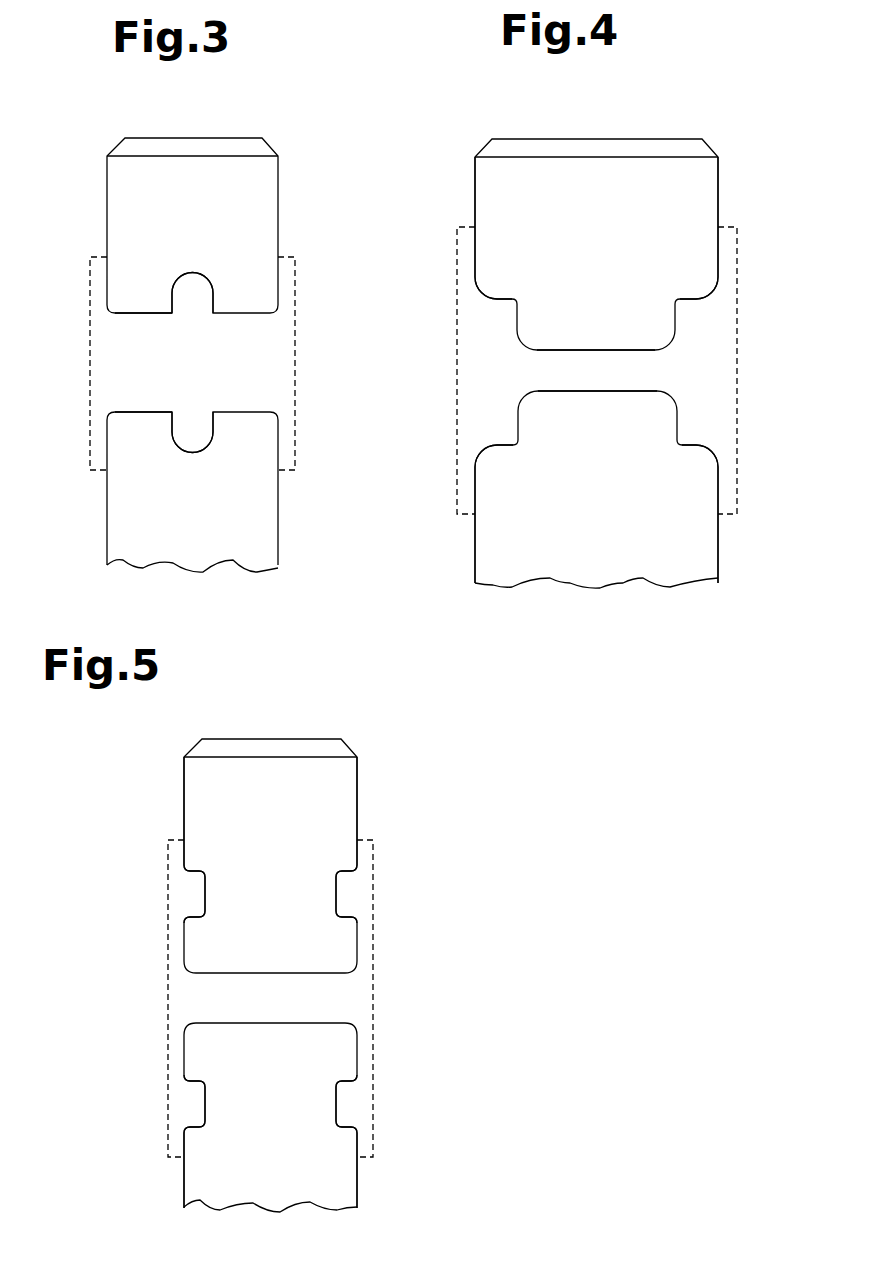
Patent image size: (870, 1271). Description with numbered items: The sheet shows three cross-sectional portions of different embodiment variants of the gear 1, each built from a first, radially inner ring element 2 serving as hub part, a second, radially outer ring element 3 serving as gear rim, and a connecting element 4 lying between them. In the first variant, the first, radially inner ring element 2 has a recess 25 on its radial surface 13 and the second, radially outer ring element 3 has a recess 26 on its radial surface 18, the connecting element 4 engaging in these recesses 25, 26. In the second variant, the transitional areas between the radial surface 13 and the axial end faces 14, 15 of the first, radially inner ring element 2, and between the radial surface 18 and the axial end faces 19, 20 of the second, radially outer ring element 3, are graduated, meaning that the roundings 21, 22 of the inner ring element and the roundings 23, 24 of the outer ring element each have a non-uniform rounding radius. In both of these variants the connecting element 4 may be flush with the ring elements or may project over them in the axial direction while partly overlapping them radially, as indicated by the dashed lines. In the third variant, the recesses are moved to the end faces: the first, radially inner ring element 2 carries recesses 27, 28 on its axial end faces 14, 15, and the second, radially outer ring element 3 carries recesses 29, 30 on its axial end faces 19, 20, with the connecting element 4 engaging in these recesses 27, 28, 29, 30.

In FIG. 3, the gear 1 is at (77, 176).
In FIG. 4, the gear 1 is at (447, 177).
In FIG. 5, the gear 1 is at (109, 831).
In FIG. 3, the first, radially inner ring element 2 is at (100, 509).
In FIG. 4, the first, radially inner ring element 2 is at (731, 524).
In FIG. 5, the first, radially inner ring element 2 is at (185, 1193).
In FIG. 3, the second, radially outer ring element 3 is at (293, 169).
In FIG. 4, the second, radially outer ring element 3 is at (736, 182).
In FIG. 5, the second, radially outer ring element 3 is at (252, 784).
In FIG. 3, the connecting element 4 is at (229, 349).
In FIG. 5, the connecting element 4 is at (187, 994).
In FIG. 3, the radial surface 13 is at (140, 408).
In FIG. 4, the radial surface 13 is at (642, 390).
In FIG. 4, the axial end face 14 is at (472, 533).
In FIG. 5, the axial end face 14 is at (182, 1177).
In FIG. 4, the axial end face 15 is at (720, 482).
In FIG. 5, the axial end face 15 is at (358, 1177).
In FIG. 3, the radial surface 18 is at (140, 314).
In FIG. 4, the radial surface 18 is at (553, 352).
In FIG. 4, the axial end face 19 is at (472, 202).
In FIG. 5, the axial end face 19 is at (182, 803).
In FIG. 4, the axial end face 20 is at (720, 243).
In FIG. 5, the axial end face 20 is at (360, 803).
In FIG. 4, the rounding 21 is at (479, 425).
In FIG. 4, the rounding 22 is at (686, 417).
In FIG. 4, the rounding 23 is at (502, 321).
In FIG. 4, the rounding 24 is at (691, 311).
In FIG. 3, the recess 25 is at (194, 429).
In FIG. 3, the recess 26 is at (198, 299).
In FIG. 5, the recess 27 is at (191, 1102).
In FIG. 5, the recess 28 is at (351, 1102).
In FIG. 5, the recess 29 is at (181, 897).
In FIG. 5, the recess 30 is at (359, 897).